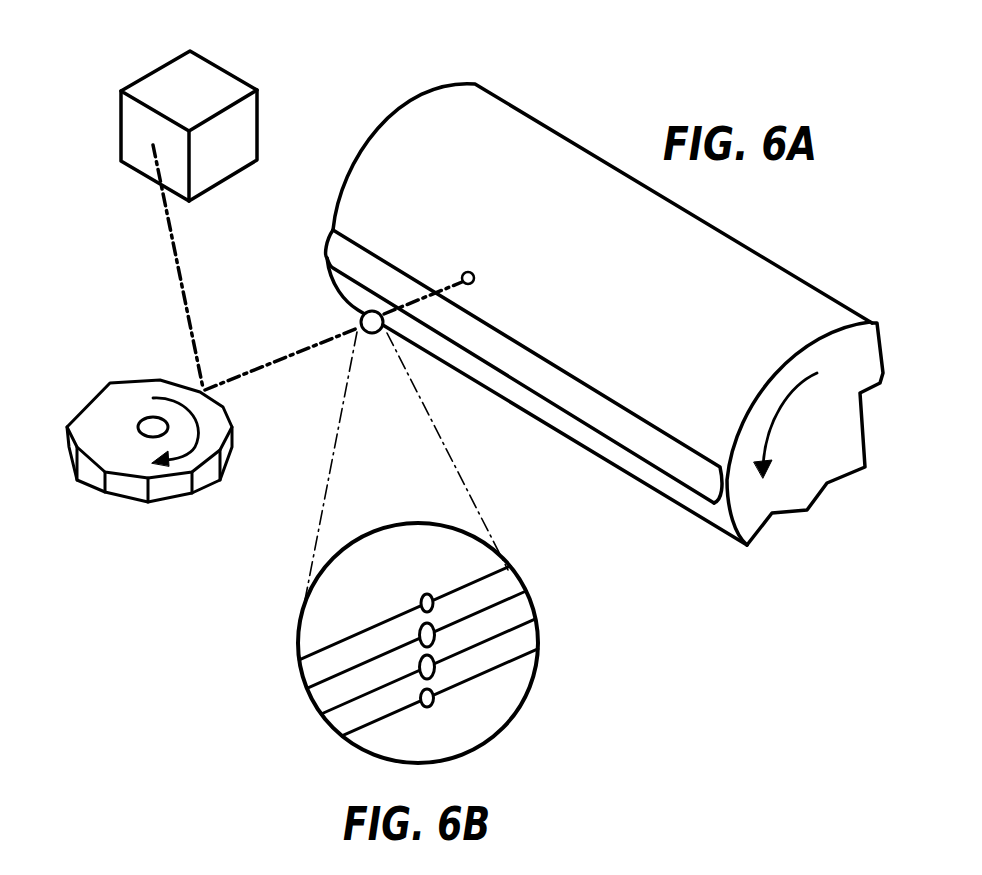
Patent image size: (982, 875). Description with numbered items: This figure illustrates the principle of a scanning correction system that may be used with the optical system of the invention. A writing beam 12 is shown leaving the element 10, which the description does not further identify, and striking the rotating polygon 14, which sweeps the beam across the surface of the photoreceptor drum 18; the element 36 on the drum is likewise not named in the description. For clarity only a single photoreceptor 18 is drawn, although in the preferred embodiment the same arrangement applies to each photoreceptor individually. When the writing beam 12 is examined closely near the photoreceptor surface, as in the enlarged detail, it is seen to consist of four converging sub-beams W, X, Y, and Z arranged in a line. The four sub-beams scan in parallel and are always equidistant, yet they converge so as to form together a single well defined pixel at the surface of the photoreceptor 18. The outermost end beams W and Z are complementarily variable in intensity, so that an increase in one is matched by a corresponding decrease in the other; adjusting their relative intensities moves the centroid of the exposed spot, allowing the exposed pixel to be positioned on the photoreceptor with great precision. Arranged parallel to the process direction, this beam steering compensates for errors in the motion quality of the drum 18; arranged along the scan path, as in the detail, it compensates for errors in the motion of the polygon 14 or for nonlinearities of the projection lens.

In FIG. 6A, the laser light source 10 is at (157, 68).
In FIG. 6A, the writing beam 12 is at (182, 282).
In FIG. 6A, the polygon 14 is at (145, 380).
In FIG. 6A, the photoreceptor drum 18 is at (508, 141).
In FIG. 6A, the slot in drum 36 is at (332, 246).
In FIG. 6B, the sub-beam W is at (427, 594).
In FIG. 6B, the sub-beam X is at (418, 634).
In FIG. 6B, the sub-beam Y is at (437, 668).
In FIG. 6B, the sub-beam Z is at (434, 703).